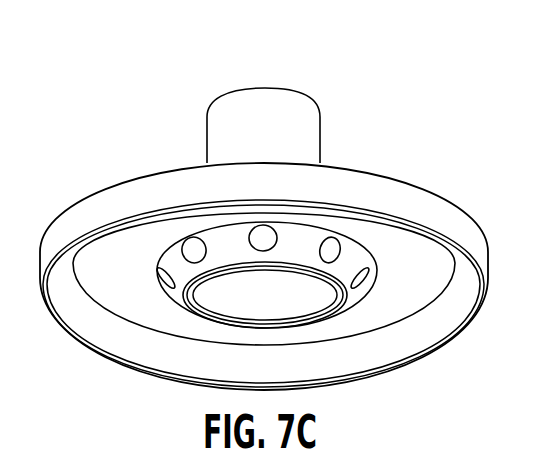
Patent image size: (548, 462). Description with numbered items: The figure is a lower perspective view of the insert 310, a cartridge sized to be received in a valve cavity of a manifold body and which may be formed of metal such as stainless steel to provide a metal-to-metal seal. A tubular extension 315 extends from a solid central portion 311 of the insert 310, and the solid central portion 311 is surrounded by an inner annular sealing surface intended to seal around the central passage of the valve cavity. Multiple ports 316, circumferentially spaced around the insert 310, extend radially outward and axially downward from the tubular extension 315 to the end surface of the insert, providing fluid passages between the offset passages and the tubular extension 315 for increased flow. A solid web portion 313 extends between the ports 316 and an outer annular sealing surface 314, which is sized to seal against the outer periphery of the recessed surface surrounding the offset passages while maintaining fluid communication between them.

The insert 310 is at (402, 132).
The solid central portion 311 is at (297, 295).
The solid web portion 313 is at (130, 270).
The outer annular sealing surface 314 is at (67, 338).
The tubular extension 315 is at (250, 107).
The ports 316 is at (258, 247).